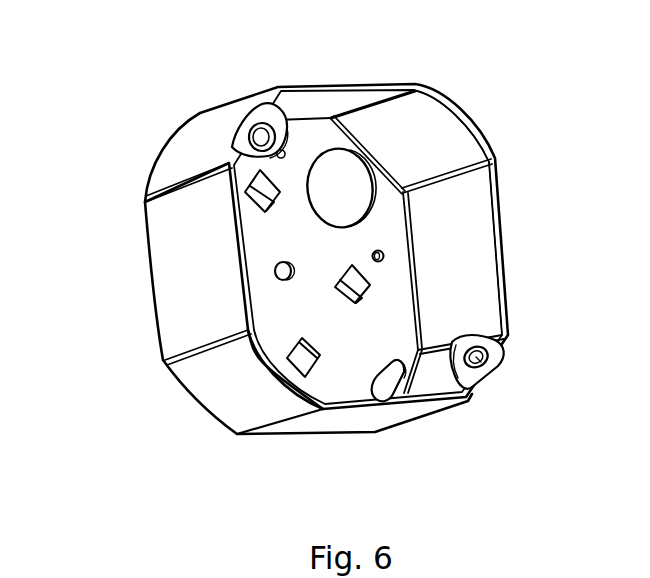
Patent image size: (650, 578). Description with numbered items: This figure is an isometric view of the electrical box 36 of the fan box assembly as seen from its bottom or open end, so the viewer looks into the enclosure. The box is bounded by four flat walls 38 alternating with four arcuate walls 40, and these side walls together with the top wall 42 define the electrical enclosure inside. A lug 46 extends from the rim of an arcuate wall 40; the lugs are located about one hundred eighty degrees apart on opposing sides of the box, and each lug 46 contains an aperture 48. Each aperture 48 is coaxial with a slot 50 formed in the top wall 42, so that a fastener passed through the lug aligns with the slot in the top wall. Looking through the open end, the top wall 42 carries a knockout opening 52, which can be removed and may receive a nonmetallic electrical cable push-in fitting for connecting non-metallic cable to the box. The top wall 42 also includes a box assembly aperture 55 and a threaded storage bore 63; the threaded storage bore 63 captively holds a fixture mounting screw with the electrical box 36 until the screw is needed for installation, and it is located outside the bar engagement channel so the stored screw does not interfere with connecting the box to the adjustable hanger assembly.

The electrical box 36 is at (90, 100).
The flat wall 38 is at (471, 301).
The arcuate wall 40 is at (426, 145).
The top wall 42 is at (327, 321).
The lug 46 is at (460, 340).
The aperture 48 is at (486, 361).
The slot 50 is at (386, 382).
The knockout opening 52 is at (326, 198).
The box assembly aperture 55 is at (289, 262).
The threaded storage bore 63 is at (385, 255).